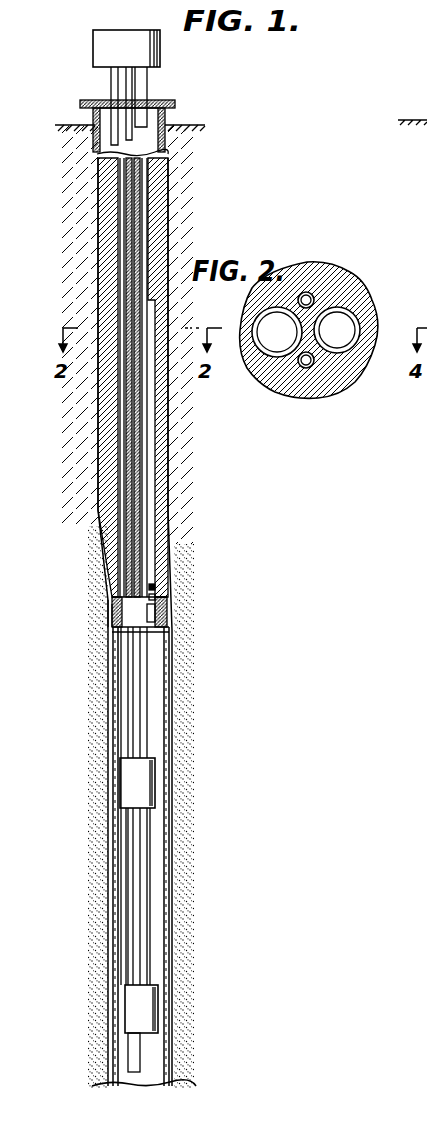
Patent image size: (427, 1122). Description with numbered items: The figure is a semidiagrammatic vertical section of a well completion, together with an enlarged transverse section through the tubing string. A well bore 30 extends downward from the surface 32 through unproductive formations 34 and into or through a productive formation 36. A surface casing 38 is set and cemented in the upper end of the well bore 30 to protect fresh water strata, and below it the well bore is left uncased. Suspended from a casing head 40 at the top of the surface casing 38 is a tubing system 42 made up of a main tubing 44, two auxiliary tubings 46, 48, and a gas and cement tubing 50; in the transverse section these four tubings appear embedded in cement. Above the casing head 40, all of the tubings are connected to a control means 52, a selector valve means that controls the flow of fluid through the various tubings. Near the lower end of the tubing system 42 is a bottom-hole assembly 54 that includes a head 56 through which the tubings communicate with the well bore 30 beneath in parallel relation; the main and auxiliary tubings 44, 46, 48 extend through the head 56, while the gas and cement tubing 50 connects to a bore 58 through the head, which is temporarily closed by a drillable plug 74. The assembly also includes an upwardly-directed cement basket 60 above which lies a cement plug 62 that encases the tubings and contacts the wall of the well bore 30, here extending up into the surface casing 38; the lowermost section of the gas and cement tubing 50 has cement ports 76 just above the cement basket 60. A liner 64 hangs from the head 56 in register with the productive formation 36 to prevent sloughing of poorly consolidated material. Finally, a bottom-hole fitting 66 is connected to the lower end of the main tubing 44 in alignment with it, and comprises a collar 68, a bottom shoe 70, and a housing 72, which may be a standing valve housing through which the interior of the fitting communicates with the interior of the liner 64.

In FIG. 1, the well bore 30 is at (167, 408).
In FIG. 1, the surface 32 is at (62, 124).
In FIG. 1, the unproductive formations 34 is at (176, 490).
In FIG. 1, the productive formation 36 is at (194, 714).
In FIG. 1, the surface casing 38 is at (164, 134).
In FIG. 1, the casing head 40 is at (178, 103).
In FIG. 1, the tubing system 42 is at (160, 435).
In FIG. 1, the main tubing 44 is at (121, 250).
In FIG. 2, the main tubing 44 is at (255, 320).
In FIG. 1, the auxiliary tubing 46 is at (129, 164).
In FIG. 2, the auxiliary tubing 46 is at (312, 296).
In FIG. 1, the auxiliary tubing 48 is at (137, 218).
In FIG. 2, the auxiliary tubing 48 is at (314, 362).
In FIG. 1, the gas and cement tubing 50 is at (145, 190).
In FIG. 2, the gas and cement tubing 50 is at (360, 322).
In FIG. 1, the control means 52 is at (160, 58).
In FIG. 1, the bottom-hole assembly 54 is at (170, 599).
In FIG. 1, the head 56 is at (110, 624).
In FIG. 1, the bore 58 is at (156, 618).
In FIG. 1, the cement basket 60 is at (164, 540).
In FIG. 1, the cement plug 62 is at (158, 462).
In FIG. 2, the cement plug 62 is at (352, 300).
In FIG. 1, the liner 64 is at (170, 674).
In FIG. 1, the bottom-hole fitting 66 is at (150, 852).
In FIG. 1, the collar 68 is at (160, 780).
In FIG. 1, the bottom shoe 70 is at (155, 992).
In FIG. 1, the housing 72 is at (136, 1050).
In FIG. 1, the drillable plug 74 is at (165, 630).
In FIG. 1, the cement ports 76 is at (156, 587).